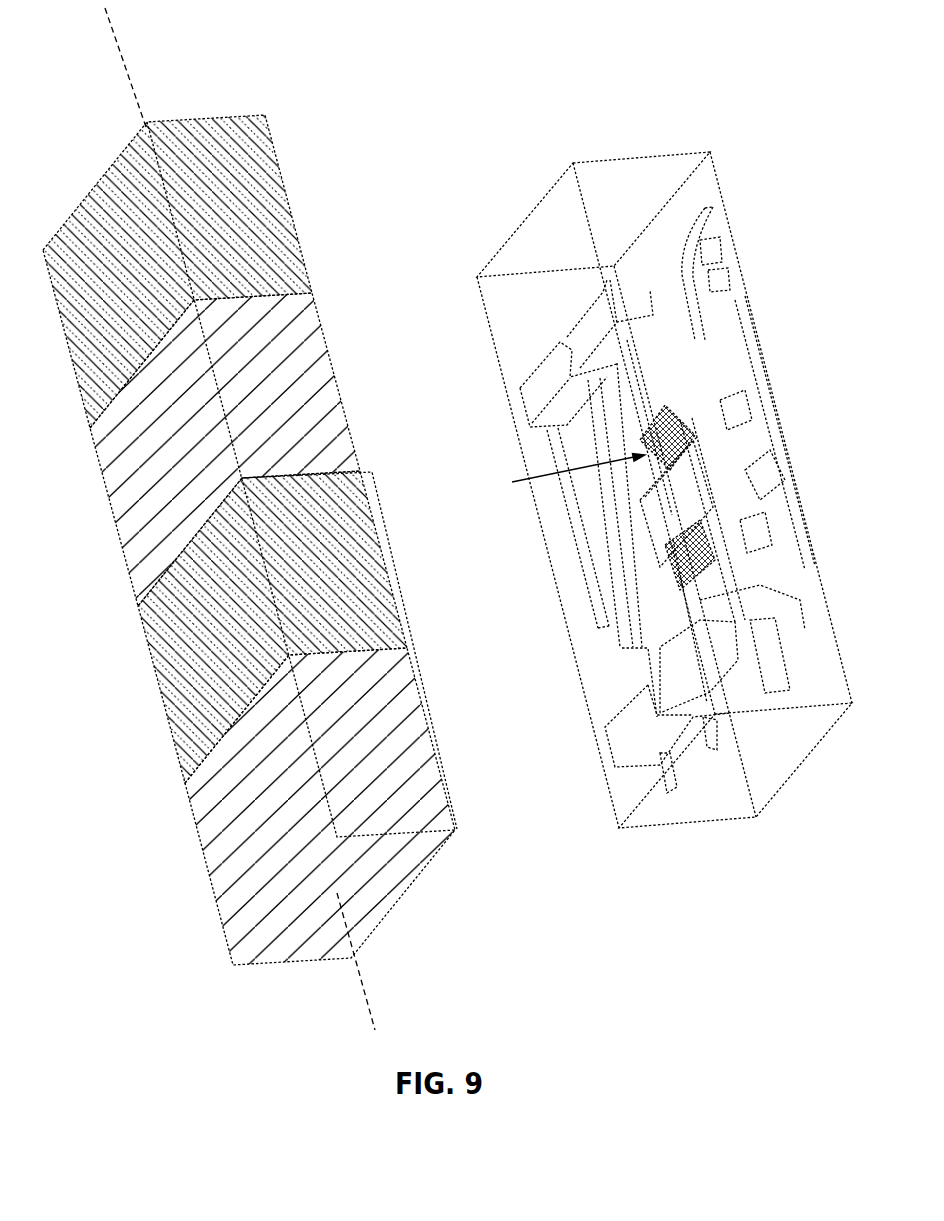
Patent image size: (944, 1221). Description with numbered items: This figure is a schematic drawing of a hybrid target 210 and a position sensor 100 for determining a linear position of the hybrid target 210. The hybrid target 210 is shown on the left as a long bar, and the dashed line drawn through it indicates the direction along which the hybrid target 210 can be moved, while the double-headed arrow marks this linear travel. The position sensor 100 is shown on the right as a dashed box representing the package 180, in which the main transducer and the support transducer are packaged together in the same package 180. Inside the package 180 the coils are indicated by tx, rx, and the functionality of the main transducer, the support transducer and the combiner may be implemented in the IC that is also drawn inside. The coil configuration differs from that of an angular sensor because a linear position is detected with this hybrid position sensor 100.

The hybrid target 210 is at (139, 32).
The position sensor 100 is at (657, 489).
The package 180 is at (733, 823).